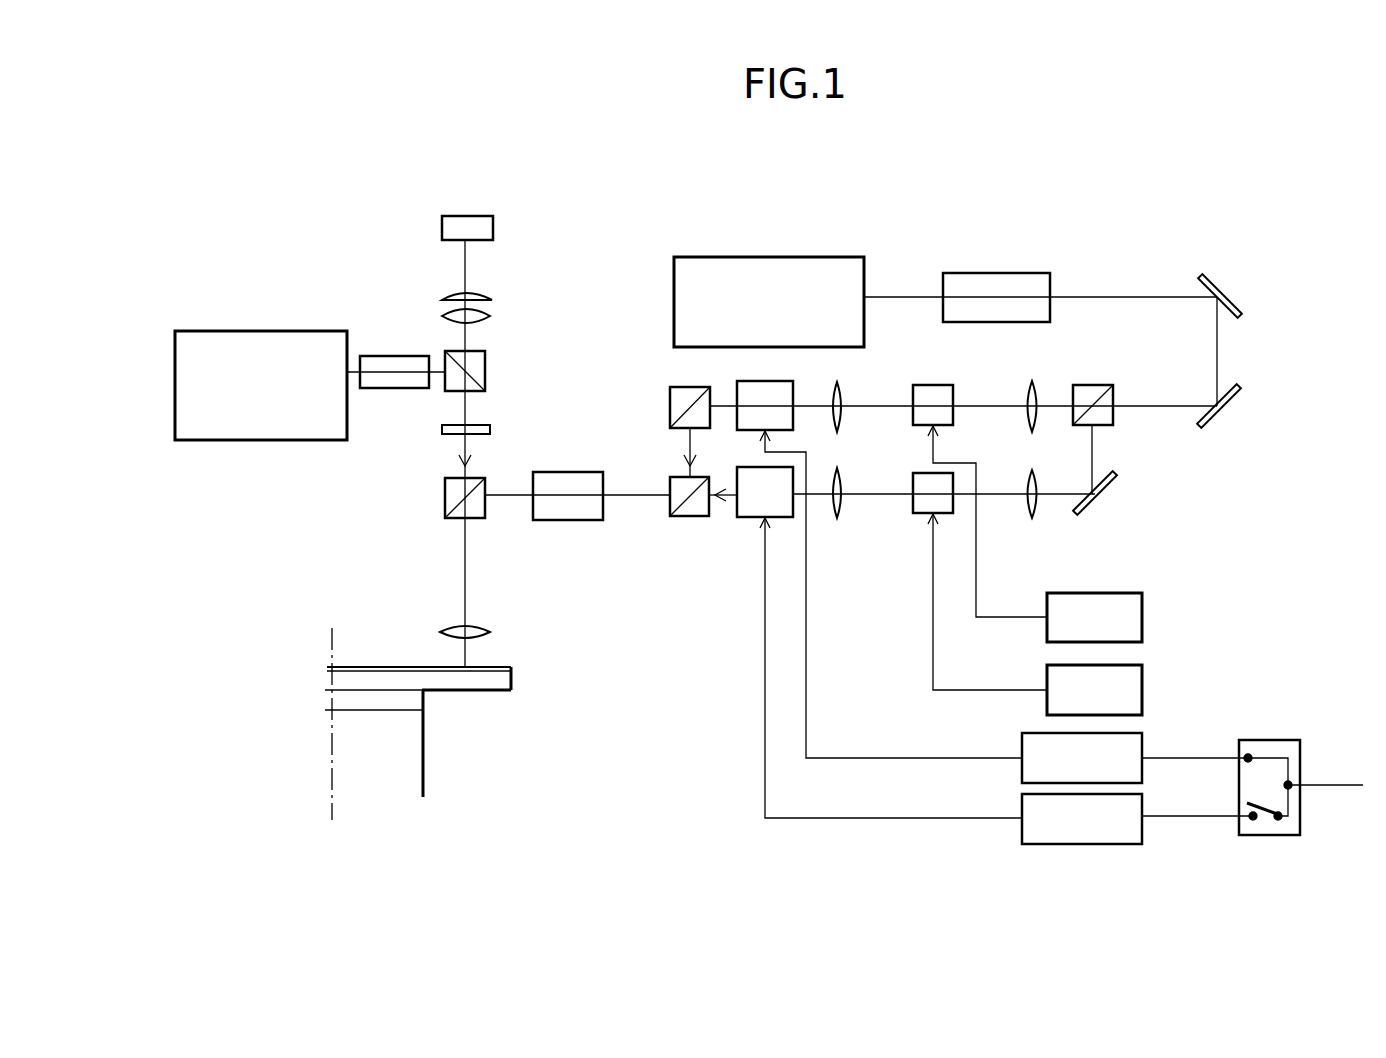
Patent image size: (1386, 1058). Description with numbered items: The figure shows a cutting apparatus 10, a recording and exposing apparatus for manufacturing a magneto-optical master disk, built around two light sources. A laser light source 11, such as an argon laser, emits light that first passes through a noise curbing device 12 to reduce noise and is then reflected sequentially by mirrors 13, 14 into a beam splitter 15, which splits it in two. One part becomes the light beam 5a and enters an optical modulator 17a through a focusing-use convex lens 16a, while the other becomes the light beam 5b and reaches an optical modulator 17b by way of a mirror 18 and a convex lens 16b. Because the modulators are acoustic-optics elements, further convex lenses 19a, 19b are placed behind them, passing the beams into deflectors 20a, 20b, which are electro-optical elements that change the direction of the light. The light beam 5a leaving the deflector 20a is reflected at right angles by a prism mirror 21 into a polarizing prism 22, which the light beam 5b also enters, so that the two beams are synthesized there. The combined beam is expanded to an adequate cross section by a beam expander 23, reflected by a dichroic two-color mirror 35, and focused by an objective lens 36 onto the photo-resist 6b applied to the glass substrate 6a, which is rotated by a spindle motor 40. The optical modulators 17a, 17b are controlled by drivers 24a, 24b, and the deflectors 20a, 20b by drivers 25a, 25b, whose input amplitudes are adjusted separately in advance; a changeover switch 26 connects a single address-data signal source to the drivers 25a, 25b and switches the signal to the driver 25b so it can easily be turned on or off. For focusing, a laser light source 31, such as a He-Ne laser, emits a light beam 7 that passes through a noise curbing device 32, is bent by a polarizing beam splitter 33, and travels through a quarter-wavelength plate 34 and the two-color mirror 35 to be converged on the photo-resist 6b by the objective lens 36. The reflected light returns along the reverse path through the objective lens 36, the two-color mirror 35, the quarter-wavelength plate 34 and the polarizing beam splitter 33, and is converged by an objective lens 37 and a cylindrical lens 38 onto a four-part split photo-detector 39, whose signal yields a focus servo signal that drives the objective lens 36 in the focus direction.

The cutting apparatus 10 is at (1107, 232).
The laser light source 11 is at (762, 257).
The noise curbing device 12 is at (978, 273).
The mirror 13 is at (1227, 288).
The mirror 14 is at (1229, 415).
The beam splitter 15 is at (1098, 385).
The focusing-use convex lens 16a is at (1038, 396).
The focusing-use convex lens 16b is at (1026, 514).
The optical modulator 17a is at (936, 385).
The optical modulator 17b is at (913, 506).
The mirror 18 is at (1118, 482).
The convex lens 19a is at (845, 392).
The convex lens 19b is at (848, 476).
The deflector 20a is at (760, 381).
The deflector 20b is at (750, 518).
The prism mirror 21 is at (680, 387).
The polarizing prism 22 is at (673, 513).
The beam expander 23 is at (577, 472).
The driver 24a is at (1082, 593).
The driver 24b is at (1142, 689).
The driver 25a is at (1145, 740).
The driver 25b is at (1135, 845).
The changeover switch 26 is at (1272, 740).
The laser light source 31 is at (270, 331).
The noise curbing device 32 is at (380, 356).
The polarizing beam splitter 33 is at (487, 367).
The quarter-wavelength plate 34 is at (487, 427).
The 2-color mirror 35 is at (445, 500).
The objective lens 36 is at (490, 631).
The objective lens 37 is at (492, 316).
The cylindrical lens 38 is at (492, 298).
The 4-part split photo-detector 39 is at (493, 228).
The light beam 5a is at (688, 441).
The light beam 5b is at (726, 500).
The glass substrate 6a is at (512, 691).
The photo-resist 6b is at (513, 667).
The light beam 7 is at (462, 446).
The spindle motor 40 is at (425, 770).